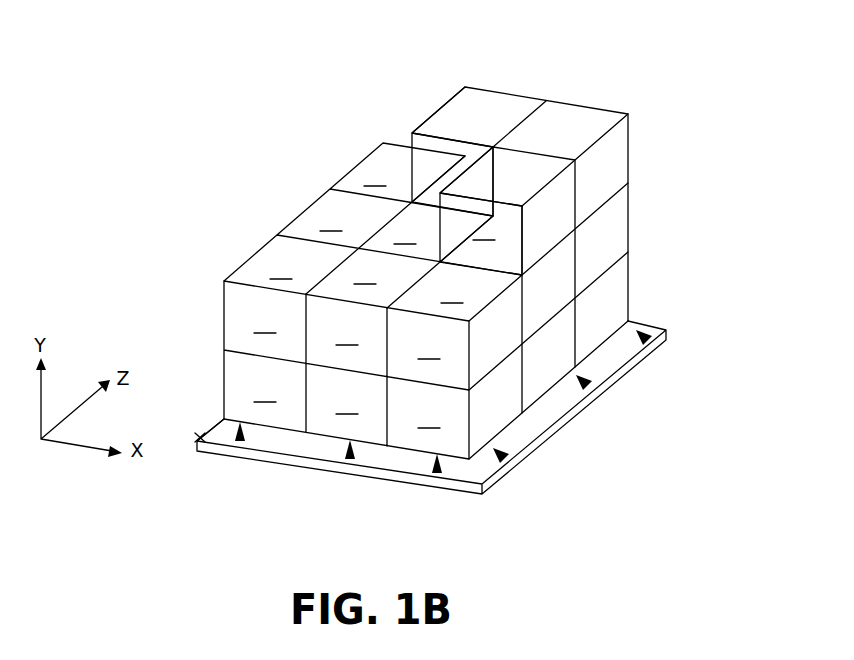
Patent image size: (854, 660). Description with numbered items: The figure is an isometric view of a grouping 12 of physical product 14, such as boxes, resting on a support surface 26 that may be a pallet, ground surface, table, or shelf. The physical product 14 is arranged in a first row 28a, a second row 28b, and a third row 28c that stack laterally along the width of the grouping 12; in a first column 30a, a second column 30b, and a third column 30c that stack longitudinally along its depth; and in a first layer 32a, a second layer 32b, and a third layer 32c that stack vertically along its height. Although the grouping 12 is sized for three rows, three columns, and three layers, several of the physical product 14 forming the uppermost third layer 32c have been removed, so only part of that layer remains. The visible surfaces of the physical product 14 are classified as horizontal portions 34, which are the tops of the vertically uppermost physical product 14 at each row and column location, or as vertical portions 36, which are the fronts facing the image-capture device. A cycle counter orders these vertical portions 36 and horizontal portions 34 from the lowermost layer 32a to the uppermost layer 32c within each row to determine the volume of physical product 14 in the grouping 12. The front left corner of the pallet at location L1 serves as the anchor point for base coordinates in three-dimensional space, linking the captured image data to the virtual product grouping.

The grouping 12 is at (431, 270).
The physical product 14 is at (558, 365).
The support surface 26 is at (278, 458).
The first row 28a is at (240, 441).
The second row 28b is at (350, 459).
The third row 28c is at (437, 473).
The first column 30a is at (502, 458).
The second column 30b is at (586, 385).
The third column 30c is at (645, 340).
The first layer 32a is at (640, 300).
The second layer 32b is at (640, 228).
The third layer 32c is at (640, 160).
The horizontal portion 34 is at (475, 118).
The vertical portion 36 is at (425, 148).
The location L1 is at (186, 432).